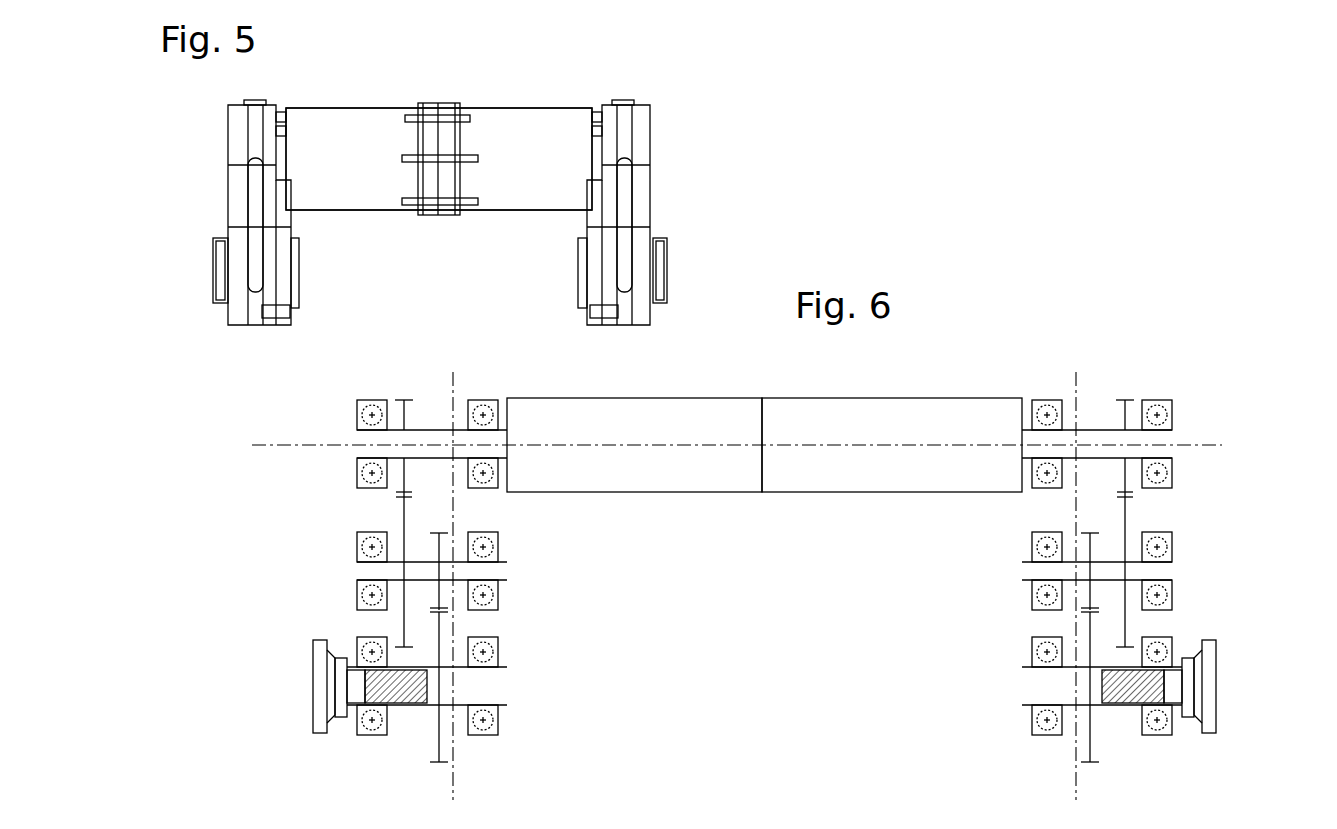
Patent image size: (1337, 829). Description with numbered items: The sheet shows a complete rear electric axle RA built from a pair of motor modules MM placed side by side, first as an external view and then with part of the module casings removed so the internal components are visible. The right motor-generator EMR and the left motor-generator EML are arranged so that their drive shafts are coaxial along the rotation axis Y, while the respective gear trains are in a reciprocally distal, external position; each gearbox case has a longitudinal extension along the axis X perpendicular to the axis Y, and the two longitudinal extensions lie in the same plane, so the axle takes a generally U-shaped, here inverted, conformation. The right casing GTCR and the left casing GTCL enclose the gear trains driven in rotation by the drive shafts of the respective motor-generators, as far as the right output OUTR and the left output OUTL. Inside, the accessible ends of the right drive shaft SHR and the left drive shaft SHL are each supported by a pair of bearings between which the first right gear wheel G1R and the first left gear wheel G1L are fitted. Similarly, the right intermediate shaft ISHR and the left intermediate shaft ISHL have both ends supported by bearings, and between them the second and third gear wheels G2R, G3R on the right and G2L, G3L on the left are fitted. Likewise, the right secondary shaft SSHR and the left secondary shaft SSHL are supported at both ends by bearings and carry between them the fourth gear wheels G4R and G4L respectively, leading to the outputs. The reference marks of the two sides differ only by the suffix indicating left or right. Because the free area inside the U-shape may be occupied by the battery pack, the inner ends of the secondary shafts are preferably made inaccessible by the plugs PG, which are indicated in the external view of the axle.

In FIG. 5, the electric axle RA is at (556, 89).
In FIG. 5, the motor module MM is at (497, 93).
In FIG. 5, the left motor-generator EML is at (362, 159).
In FIG. 6, the left motor-generator EML is at (634, 445).
In FIG. 5, the right motor-generator EMR is at (515, 159).
In FIG. 6, the right motor-generator EMR is at (892, 445).
In FIG. 5, the left casing GTCL is at (217, 186).
In FIG. 5, the right casing GTCR is at (661, 196).
In FIG. 5, the left output OUTL is at (210, 307).
In FIG. 6, the left output OUTL is at (304, 699).
In FIG. 5, the right output OUTR is at (678, 268).
In FIG. 6, the right output OUTR is at (1225, 699).
In FIG. 5, the plugs PG is at (324, 297).
In FIG. 6, the Y axis Y is at (302, 441).
In FIG. 6, the X axis X is at (499, 521).
In FIG. 6, the left drive shaft SHL is at (437, 432).
In FIG. 6, the right drive shaft SHR is at (1079, 432).
In FIG. 6, the first left gear wheel G1L is at (402, 398).
In FIG. 6, the first right gear wheel G1R is at (1118, 398).
In FIG. 6, the second left gear wheel G2L is at (400, 512).
In FIG. 6, the second right gear wheel G2R is at (1128, 510).
In FIG. 6, the left intermediate shaft ISHL is at (365, 566).
In FIG. 6, the right intermediate shaft ISHR is at (1162, 566).
In FIG. 6, the third left gear wheel G3L is at (495, 622).
In FIG. 6, the third right gear wheel G3R is at (1032, 620).
In FIG. 6, the fourth left gear wheel G4L is at (450, 764).
In FIG. 6, the fourth right gear wheel G4R is at (1062, 764).
In FIG. 6, the left secondary shaft SSHL is at (490, 688).
In FIG. 6, the right secondary shaft SSHR is at (1042, 688).